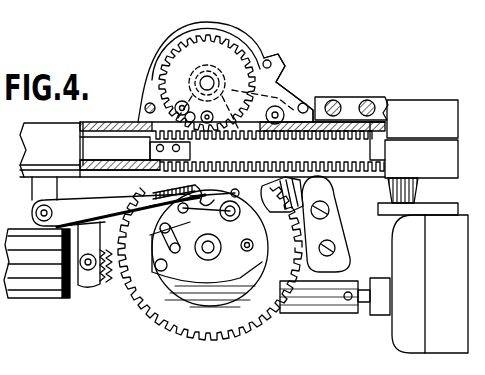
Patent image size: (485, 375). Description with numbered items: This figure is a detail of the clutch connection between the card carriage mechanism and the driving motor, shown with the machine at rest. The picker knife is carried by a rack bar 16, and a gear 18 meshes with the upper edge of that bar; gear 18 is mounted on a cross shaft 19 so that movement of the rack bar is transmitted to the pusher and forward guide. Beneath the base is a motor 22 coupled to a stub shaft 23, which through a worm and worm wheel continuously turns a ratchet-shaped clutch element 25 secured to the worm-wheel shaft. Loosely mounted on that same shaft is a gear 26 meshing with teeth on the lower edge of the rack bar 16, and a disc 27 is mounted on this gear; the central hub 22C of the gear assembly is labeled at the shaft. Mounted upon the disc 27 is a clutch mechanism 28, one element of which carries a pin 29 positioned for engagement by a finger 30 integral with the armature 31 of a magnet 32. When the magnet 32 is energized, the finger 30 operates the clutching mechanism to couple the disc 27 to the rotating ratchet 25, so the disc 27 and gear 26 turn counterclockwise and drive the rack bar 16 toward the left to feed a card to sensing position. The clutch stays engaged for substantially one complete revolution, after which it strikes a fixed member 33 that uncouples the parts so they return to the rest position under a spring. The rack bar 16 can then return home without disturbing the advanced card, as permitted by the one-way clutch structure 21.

The rack bar 16 is at (343, 125).
The gear 18 is at (209, 80).
The cross shaft 19 is at (194, 88).
The one-way clutch structure 21 is at (273, 85).
The motor 22 is at (423, 265).
The hub of gear 22C is at (210, 250).
The stub shaft 23 is at (310, 298).
The ratchet-shaped clutch element 25 is at (252, 235).
The gear 26 is at (143, 315).
The disc 27 is at (195, 293).
The clutch mechanism 28 is at (183, 188).
The pin 29 is at (108, 250).
The finger 30 is at (100, 200).
The armature 31 is at (131, 218).
The magnet 32 is at (35, 268).
The fixed member 33 is at (310, 190).